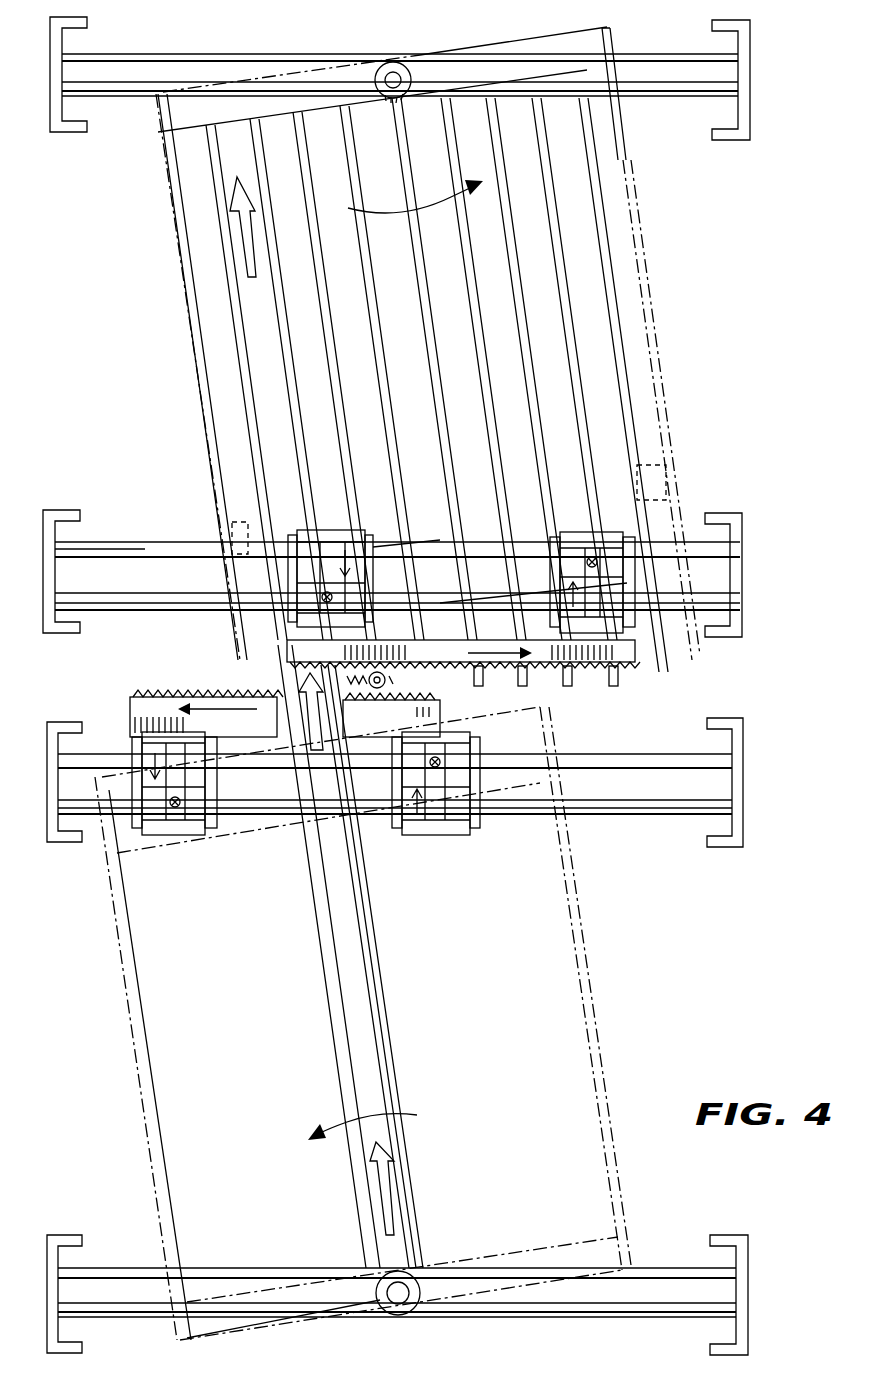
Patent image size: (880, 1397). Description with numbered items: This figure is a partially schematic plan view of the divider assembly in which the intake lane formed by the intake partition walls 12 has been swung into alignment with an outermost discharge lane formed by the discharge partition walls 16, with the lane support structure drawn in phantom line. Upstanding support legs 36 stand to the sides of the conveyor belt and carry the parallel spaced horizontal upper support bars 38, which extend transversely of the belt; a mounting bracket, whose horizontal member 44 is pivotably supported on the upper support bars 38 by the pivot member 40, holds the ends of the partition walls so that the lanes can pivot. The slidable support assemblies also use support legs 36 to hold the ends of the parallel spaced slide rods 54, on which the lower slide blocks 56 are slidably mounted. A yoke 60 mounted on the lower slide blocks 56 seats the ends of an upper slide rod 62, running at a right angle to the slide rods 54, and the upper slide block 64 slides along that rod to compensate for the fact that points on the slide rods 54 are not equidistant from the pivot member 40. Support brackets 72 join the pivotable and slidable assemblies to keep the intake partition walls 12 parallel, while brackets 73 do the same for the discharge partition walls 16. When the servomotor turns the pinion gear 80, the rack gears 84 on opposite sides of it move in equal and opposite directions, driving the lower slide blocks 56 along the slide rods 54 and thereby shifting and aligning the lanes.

The intake partition walls 12 is at (383, 1017).
The discharge partition walls 16 is at (296, 150).
The upstanding support legs 36 is at (752, 44).
The upper support bars 38 is at (150, 60).
The pivot member 40 is at (398, 62).
The horizontal member 44 is at (562, 30).
The slide rods 54 is at (137, 549).
The lower slide blocks 56 is at (620, 642).
The yoke 60 is at (332, 534).
The upper slide rod 62 is at (373, 540).
The upper slide block 64 is at (312, 600).
The support brackets 72 is at (594, 1035).
The brackets 73 is at (644, 286).
The pinion gear 80 is at (478, 668).
The rack gears 84 is at (158, 703).